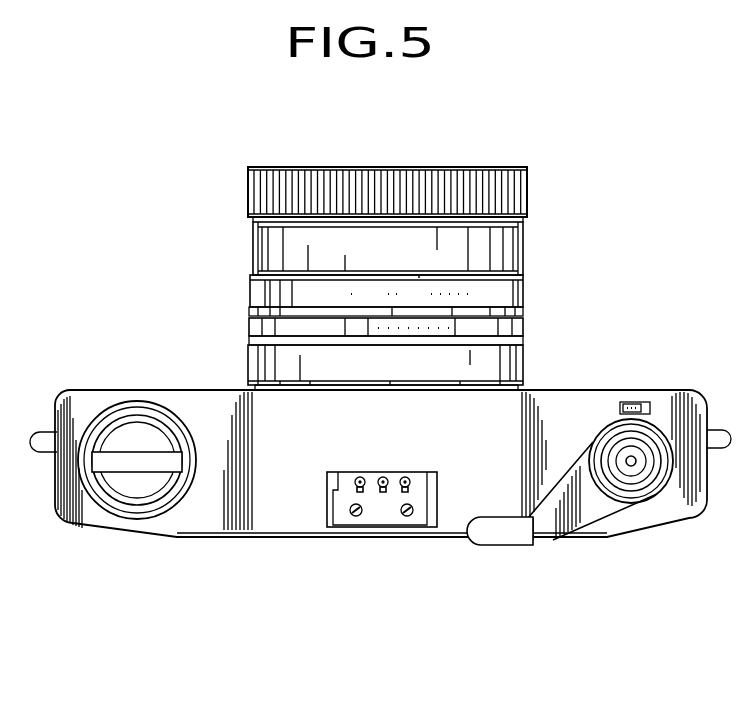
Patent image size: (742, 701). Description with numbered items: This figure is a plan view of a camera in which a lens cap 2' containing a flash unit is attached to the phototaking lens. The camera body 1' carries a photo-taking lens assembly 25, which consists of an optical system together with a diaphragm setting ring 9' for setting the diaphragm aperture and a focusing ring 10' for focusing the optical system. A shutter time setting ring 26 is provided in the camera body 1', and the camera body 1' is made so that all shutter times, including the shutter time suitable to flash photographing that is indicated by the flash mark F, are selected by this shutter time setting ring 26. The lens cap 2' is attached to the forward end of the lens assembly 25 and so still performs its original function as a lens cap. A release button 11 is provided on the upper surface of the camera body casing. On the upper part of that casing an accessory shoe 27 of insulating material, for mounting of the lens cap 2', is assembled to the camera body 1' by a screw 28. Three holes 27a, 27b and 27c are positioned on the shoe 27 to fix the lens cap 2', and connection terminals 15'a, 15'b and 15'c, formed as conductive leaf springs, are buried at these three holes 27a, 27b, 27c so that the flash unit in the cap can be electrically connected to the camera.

The camera body 1' is at (380, 431).
The lens cap 2' is at (387, 161).
The photo-taking lens assembly 25 is at (250, 244).
The shutter time setting ring 26 is at (513, 296).
The diaphragm setting ring 9' is at (413, 319).
The focusing ring 10' is at (413, 366).
The flash mark F is at (419, 275).
The release button 11 is at (634, 464).
The accessory shoe 27 is at (333, 483).
The connection terminal 15'a is at (423, 446).
The connection terminal 15'b is at (382, 446).
The connection terminal 15'c is at (340, 446).
The hole 27a is at (405, 493).
The hole 27b is at (383, 500).
The hole 27c is at (361, 494).
The screw 28 is at (356, 517).